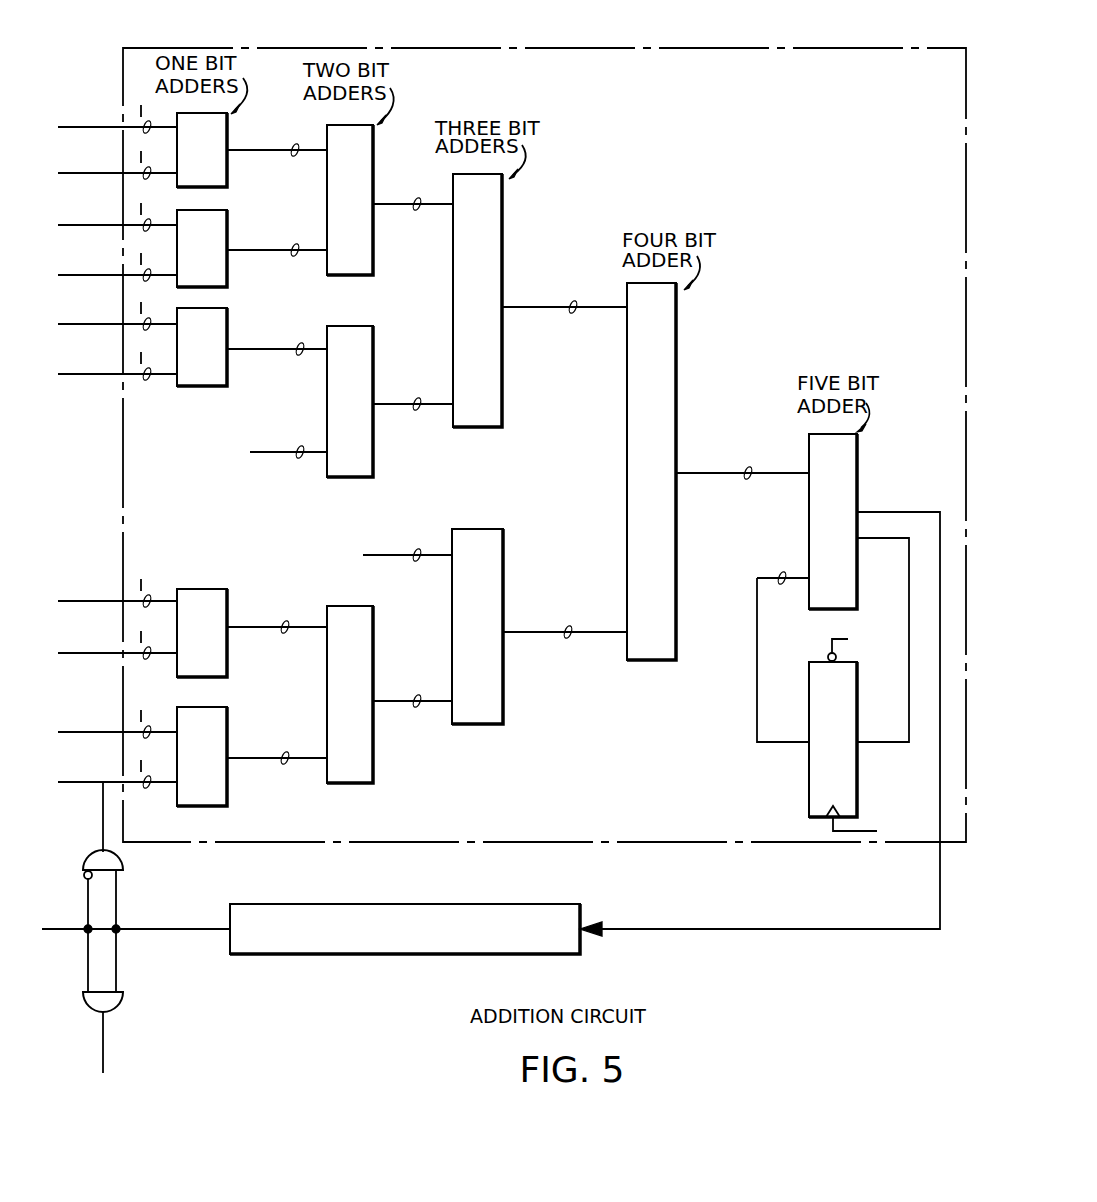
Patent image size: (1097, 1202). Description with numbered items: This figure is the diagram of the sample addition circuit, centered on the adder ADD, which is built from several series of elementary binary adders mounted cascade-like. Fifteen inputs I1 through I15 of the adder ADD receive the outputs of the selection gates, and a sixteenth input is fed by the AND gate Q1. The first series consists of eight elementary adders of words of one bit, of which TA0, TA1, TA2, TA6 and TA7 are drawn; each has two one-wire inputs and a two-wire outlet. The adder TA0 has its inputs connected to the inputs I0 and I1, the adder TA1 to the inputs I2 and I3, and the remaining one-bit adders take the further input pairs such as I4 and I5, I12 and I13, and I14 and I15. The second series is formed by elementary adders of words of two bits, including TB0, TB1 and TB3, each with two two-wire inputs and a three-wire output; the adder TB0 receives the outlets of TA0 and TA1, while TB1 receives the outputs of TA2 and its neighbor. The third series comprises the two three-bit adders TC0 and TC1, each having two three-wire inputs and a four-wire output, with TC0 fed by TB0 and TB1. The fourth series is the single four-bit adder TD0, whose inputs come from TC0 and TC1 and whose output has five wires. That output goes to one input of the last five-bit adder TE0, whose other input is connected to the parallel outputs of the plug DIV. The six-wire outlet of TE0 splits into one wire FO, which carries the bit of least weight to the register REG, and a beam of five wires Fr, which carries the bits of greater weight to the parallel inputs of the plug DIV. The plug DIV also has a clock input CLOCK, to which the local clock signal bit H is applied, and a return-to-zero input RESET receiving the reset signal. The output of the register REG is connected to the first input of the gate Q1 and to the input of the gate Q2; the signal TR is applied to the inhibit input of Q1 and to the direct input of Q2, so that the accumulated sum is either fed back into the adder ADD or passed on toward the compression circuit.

The adder ADD is at (492, 82).
The input I0 is at (117, 118).
The input I1 is at (117, 164).
The input I2 is at (117, 216).
The input I3 is at (117, 266).
The input I4 is at (117, 315).
The input I5 is at (117, 365).
The input I12 is at (117, 592).
The input I13 is at (117, 644).
The input I14 is at (117, 723).
The input I15 is at (117, 773).
The elementary adder of words of one bit TA0 is at (208, 162).
The elementary adder of words of one bit TA1 is at (212, 260).
The elementary adder of words of one bit TA2 is at (212, 360).
The elementary adder of words of one bit TA6 is at (212, 650).
The elementary adder of words of one bit TA7 is at (212, 778).
The elementary adder of words of two bits TB0 is at (362, 242).
The elementary adder of words of two bits TB1 is at (362, 447).
The elementary adder of words of two bits TB3 is at (362, 738).
The elementary adder of words of three bits TC0 is at (487, 343).
The elementary adder of words of three bits TC1 is at (488, 668).
The elementary adder of words of four bits TD0 is at (665, 412).
The adder of words with five bits TE0 is at (843, 468).
The wire FO is at (760, 713).
The beam of five wires Fr is at (884, 542).
The plug DIV is at (820, 753).
The return to zero input RESET is at (866, 624).
The local clock signal bit H is at (871, 820).
The clock input CLOCK is at (855, 833).
The AND gate Q1 is at (112, 863).
The AND gate Q2 is at (112, 1000).
The signal TR is at (136, 921).
The register REG is at (418, 923).